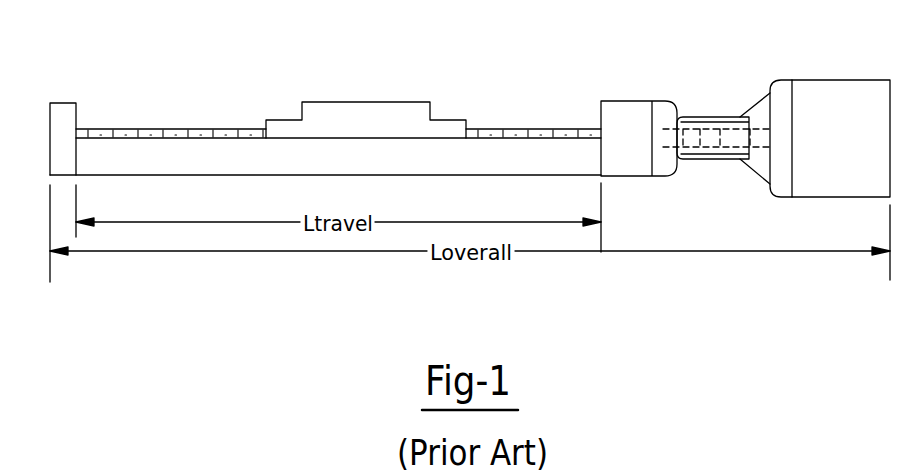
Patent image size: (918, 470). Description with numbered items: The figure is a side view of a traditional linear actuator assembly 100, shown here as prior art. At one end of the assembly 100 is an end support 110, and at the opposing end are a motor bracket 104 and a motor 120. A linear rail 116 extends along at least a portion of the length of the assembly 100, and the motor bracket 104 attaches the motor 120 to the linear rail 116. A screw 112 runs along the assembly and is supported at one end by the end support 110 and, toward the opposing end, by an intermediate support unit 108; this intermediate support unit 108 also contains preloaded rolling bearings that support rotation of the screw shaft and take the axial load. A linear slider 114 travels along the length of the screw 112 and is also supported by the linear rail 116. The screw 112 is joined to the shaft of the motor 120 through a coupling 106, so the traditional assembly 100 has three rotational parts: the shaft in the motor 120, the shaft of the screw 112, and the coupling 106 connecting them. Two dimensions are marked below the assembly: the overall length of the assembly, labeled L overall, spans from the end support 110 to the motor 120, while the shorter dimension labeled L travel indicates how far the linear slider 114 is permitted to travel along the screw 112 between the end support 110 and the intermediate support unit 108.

The traditional linear actuator assembly 100 is at (139, 68).
The motor bracket 104 is at (779, 83).
The coupling 106 is at (708, 161).
The intermediate support unit 108 is at (635, 100).
The end support 110 is at (57, 118).
The screw 112 is at (202, 128).
The linear slider 114 is at (370, 118).
The linear rail 116 is at (187, 177).
The motor 120 is at (860, 98).